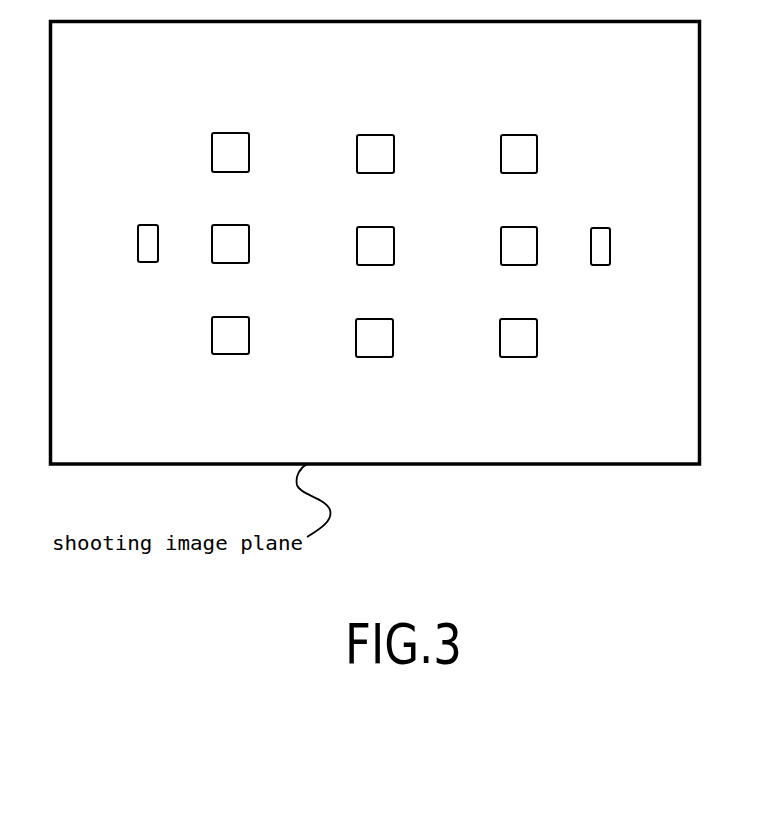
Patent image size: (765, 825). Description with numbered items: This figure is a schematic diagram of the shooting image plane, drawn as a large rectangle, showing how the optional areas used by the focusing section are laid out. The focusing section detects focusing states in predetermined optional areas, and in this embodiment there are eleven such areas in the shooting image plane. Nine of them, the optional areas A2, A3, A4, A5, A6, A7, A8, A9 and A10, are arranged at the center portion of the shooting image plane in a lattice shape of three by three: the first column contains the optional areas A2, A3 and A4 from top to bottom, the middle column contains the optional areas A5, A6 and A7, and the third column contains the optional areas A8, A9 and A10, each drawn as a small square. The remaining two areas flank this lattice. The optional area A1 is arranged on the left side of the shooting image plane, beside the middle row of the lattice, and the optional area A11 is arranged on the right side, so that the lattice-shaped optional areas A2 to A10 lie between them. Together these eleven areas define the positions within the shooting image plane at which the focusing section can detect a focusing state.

The optional area A1 is at (138, 253).
The optional area A2 is at (212, 153).
The optional area A3 is at (212, 255).
The optional area A4 is at (212, 338).
The optional area A5 is at (357, 157).
The optional area A6 is at (357, 249).
The optional area A7 is at (356, 341).
The optional area A8 is at (501, 160).
The optional area A9 is at (501, 252).
The optional area A10 is at (500, 340).
The optional area A11 is at (591, 248).